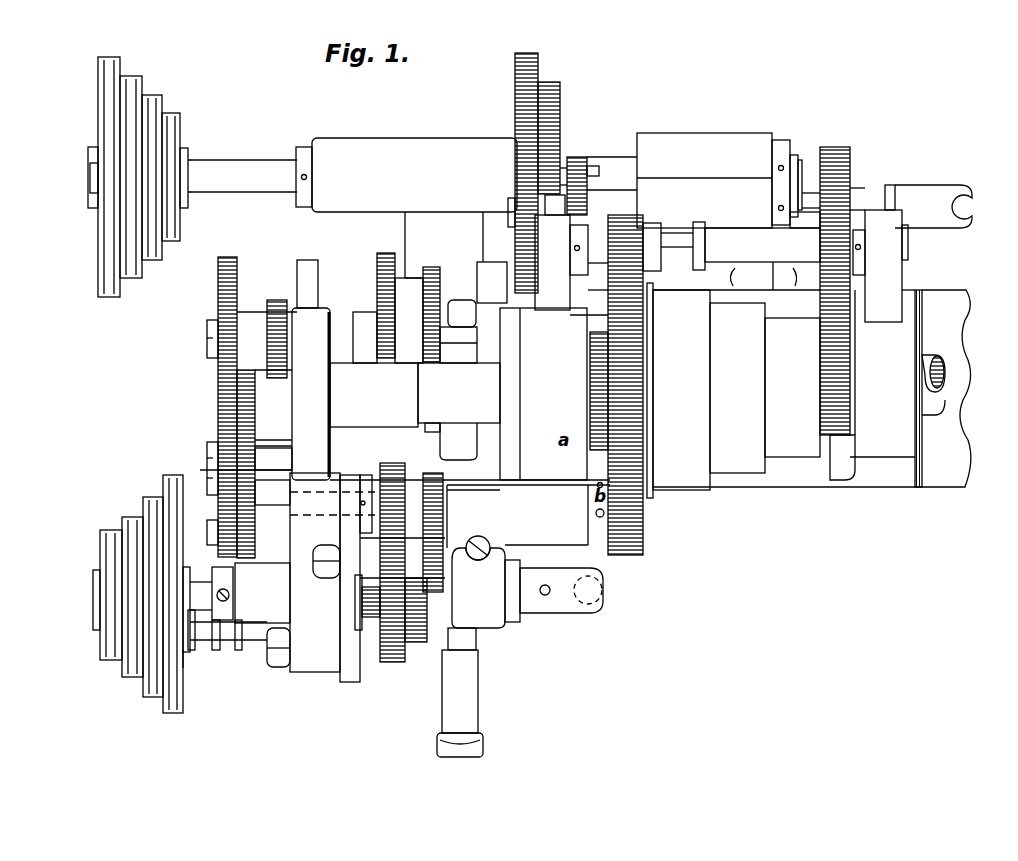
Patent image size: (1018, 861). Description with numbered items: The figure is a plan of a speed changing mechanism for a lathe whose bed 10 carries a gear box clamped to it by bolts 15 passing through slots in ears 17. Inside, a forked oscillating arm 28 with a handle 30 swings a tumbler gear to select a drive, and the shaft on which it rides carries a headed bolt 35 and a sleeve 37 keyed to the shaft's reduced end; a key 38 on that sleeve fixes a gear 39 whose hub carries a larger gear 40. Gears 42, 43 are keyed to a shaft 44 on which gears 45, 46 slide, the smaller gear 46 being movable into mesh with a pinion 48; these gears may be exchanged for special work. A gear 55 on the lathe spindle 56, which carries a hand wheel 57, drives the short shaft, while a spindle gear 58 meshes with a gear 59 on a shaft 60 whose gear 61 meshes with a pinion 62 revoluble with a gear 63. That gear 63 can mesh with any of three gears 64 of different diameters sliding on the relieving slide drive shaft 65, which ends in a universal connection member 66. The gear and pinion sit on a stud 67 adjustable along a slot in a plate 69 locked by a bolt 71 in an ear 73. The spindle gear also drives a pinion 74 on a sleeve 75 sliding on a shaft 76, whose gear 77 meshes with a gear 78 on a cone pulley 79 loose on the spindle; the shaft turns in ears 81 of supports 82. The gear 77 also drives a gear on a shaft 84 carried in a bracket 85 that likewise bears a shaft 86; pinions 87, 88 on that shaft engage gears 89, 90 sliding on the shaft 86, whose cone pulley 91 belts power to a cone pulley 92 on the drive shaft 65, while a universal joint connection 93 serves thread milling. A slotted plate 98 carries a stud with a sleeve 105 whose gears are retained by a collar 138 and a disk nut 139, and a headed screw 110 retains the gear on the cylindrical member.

The bed 10 is at (945, 470).
The bolts 15 is at (462, 302).
The ears 17 is at (492, 266).
The forked oscillating arm 28 is at (470, 637).
The handle 30 is at (478, 692).
The headed bolt 35 is at (208, 490).
The sleeve 37 is at (264, 486).
The key 38 is at (262, 460).
The gear 39 is at (218, 434).
The larger gear 40 is at (255, 430).
The gear 42 is at (226, 257).
The gear 43 is at (272, 298).
The shaft 44 is at (446, 300).
The gear 45 is at (376, 262).
The smaller gear 46 is at (430, 266).
The pinion 48 is at (434, 423).
The gear 55 is at (592, 392).
The lathe spindle 56 is at (456, 428).
The hand wheel 57 is at (320, 395).
The gear 58 is at (650, 500).
The gear 59 is at (645, 545).
The shaft 60 is at (528, 500).
The gear 61 is at (444, 512).
The pinion 62 is at (447, 542).
The gear 63 is at (392, 664).
The gears 64 is at (362, 603).
The drive shaft 65 is at (200, 582).
The member 66 is at (578, 590).
The stud 67 is at (312, 555).
The plate 69 is at (347, 672).
The bolt 71 is at (264, 655).
The ear 73 is at (302, 670).
The pinion 74 is at (640, 222).
The sleeve 75 is at (672, 223).
The shaft 76 is at (738, 236).
The gear 77 is at (836, 150).
The gear 78 is at (842, 482).
The cone pulley 79 is at (780, 462).
The ears 81 is at (918, 268).
The supports 82 is at (535, 370).
The shaft 84 is at (862, 188).
The bracket 85 is at (372, 140).
The shaft 86 is at (232, 172).
The pinion 87 is at (508, 205).
The pinion 88 is at (580, 158).
The gear 89 is at (524, 54).
The gear 90 is at (548, 84).
The cone pulley 91 is at (160, 98).
The cone pulley 92 is at (115, 672).
The universal joint connection 93 is at (948, 186).
The plate 98 is at (308, 260).
The sleeve 105 is at (226, 636).
The headed screw 110 is at (207, 452).
The collar 138 is at (212, 652).
The disk nut 139 is at (190, 654).